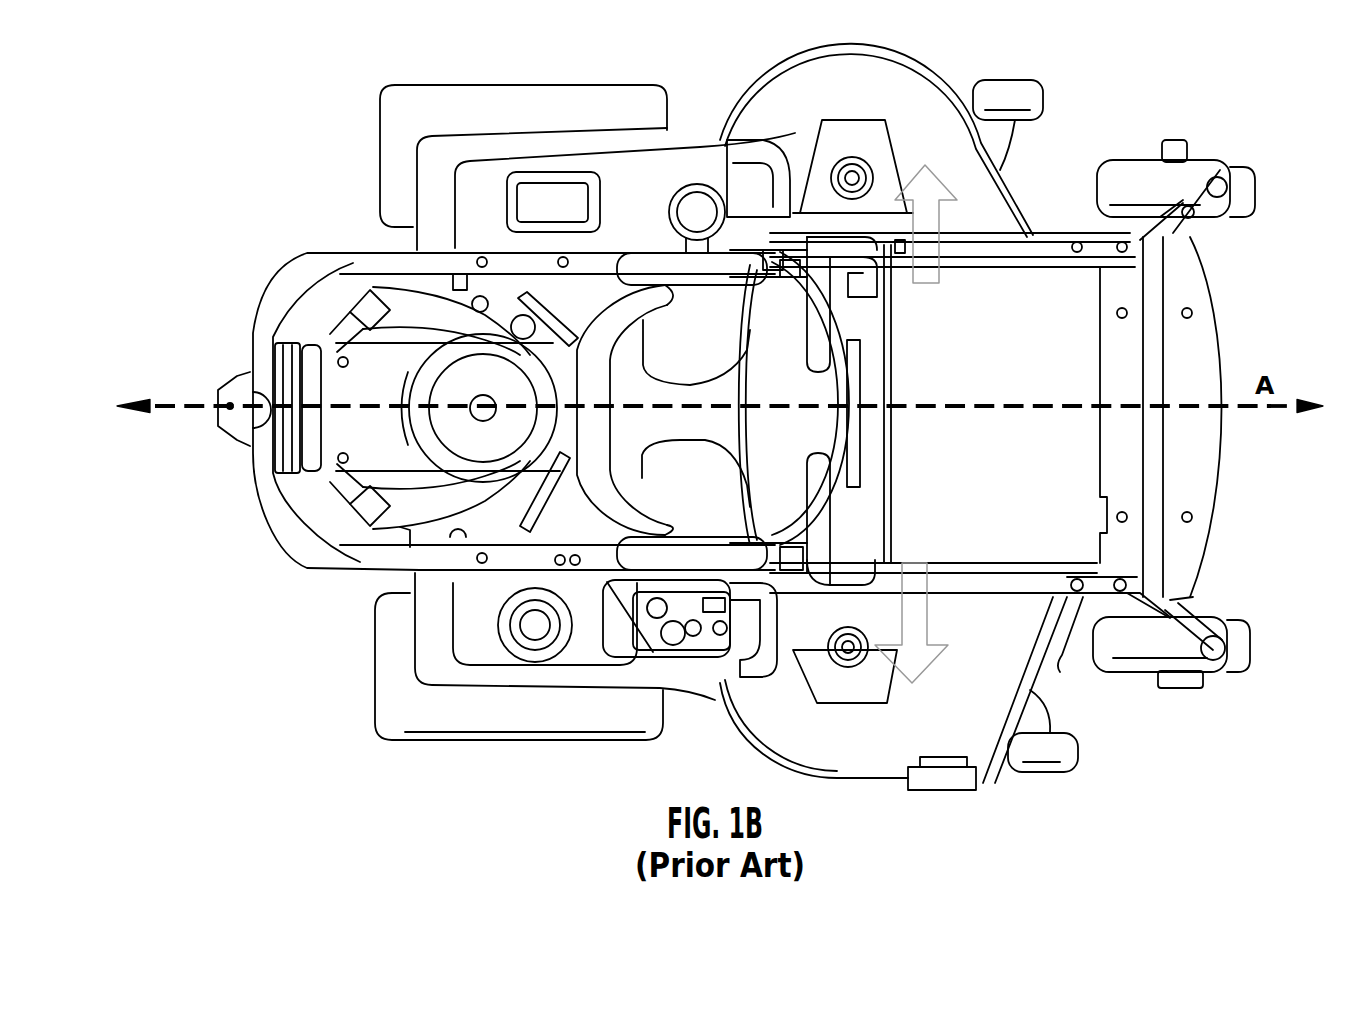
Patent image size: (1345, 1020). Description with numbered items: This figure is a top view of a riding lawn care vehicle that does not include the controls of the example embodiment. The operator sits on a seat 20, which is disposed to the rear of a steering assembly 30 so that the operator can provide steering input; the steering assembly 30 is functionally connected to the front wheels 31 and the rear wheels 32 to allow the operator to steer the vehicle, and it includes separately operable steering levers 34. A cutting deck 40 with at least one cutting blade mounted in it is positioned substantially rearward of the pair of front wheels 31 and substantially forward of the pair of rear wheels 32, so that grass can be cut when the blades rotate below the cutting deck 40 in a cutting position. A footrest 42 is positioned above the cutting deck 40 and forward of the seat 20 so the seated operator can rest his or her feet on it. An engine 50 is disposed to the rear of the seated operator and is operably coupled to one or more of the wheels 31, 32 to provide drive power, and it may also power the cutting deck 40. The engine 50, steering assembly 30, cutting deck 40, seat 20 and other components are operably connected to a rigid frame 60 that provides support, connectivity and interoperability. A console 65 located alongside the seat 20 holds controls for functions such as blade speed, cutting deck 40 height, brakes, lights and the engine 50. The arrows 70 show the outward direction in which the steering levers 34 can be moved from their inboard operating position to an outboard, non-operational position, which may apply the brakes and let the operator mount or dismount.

The seat 20 is at (712, 330).
The steering assembly 30 is at (872, 452).
The front wheels 31 is at (1230, 170).
The rear wheels 32 is at (446, 97).
The steering levers 34 is at (823, 467).
The cutting deck 40 is at (903, 83).
The footrest 42 is at (1012, 293).
The engine 50 is at (247, 268).
The frame 60 is at (1033, 690).
The console 65 is at (650, 640).
The arrows 70 is at (927, 187).